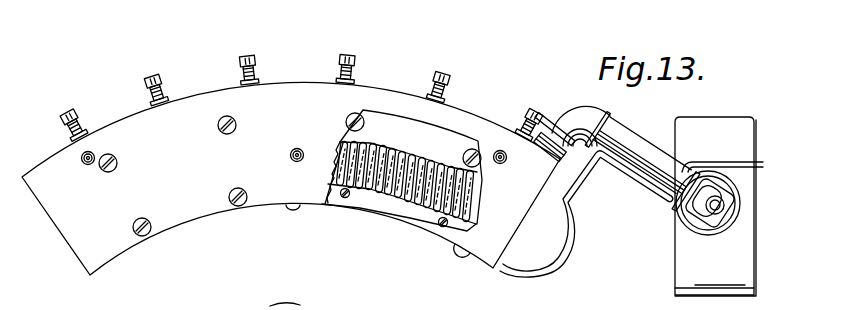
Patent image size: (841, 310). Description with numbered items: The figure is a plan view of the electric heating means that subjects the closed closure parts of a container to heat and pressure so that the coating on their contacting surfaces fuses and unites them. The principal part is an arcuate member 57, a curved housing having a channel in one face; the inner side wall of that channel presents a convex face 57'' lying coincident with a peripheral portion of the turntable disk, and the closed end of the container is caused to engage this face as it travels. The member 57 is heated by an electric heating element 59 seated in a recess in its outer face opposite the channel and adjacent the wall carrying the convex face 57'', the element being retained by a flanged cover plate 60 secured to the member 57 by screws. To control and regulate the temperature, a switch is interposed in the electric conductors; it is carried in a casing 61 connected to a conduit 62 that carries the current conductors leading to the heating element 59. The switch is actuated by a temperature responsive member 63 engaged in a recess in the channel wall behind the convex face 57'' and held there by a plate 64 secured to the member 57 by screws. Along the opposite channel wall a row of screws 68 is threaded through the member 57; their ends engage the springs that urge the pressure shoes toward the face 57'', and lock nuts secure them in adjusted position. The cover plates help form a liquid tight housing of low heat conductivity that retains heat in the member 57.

The arcuate member 57 is at (403, 137).
The convex face 57'' is at (402, 224).
The electric heating element 59 is at (427, 193).
The flanged cover plate 60 is at (196, 213).
The casing 61 is at (690, 259).
The conduit 62 is at (623, 137).
The temperature responsive member 63 is at (552, 270).
The plate 64 is at (350, 208).
The screws 68 is at (175, 84).